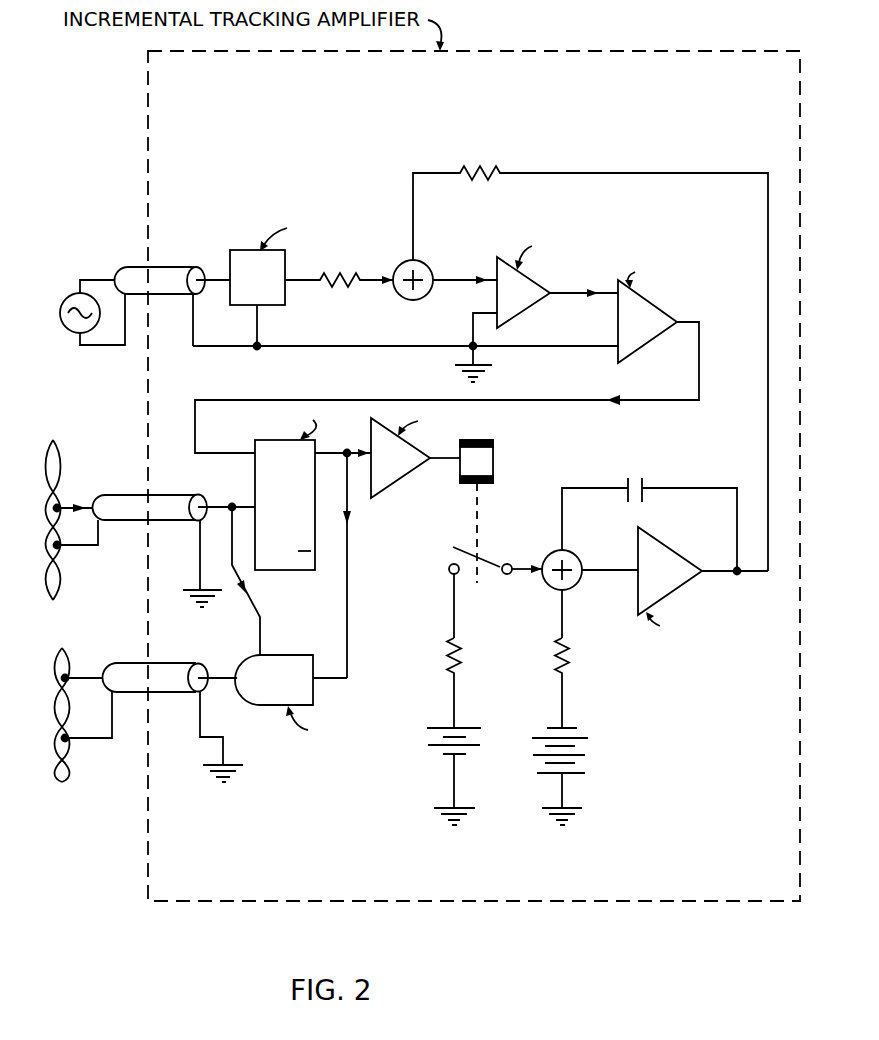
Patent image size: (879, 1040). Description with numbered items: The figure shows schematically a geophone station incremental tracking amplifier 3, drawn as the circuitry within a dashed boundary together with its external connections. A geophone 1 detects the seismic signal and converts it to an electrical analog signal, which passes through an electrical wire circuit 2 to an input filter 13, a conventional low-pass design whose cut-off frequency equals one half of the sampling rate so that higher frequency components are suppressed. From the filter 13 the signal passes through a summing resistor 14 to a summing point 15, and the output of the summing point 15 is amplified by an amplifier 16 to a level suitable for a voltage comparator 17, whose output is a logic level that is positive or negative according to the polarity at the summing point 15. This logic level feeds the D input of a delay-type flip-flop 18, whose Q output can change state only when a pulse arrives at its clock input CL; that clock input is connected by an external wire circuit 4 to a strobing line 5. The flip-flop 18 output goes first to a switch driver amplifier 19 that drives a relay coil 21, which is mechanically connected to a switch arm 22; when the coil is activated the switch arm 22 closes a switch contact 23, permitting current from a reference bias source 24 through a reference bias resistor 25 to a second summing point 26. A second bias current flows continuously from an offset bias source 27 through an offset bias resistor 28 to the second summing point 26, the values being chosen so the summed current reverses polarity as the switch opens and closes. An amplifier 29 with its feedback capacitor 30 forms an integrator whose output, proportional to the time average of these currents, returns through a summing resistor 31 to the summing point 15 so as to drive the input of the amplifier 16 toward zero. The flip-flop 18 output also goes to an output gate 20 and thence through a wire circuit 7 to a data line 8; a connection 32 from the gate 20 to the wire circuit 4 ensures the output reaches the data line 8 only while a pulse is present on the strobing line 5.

The geophone 1 is at (62, 322).
The electrical wire circuit 2 is at (173, 306).
The incremental tracking amplifier 3 is at (572, 46).
The external wire circuit 4 is at (173, 551).
The strobing line 5 is at (63, 477).
The wire circuit 7 is at (173, 722).
The data line 8 is at (55, 757).
The input filter 13 is at (288, 280).
The summing resistor 14 is at (340, 270).
The summing point 15 is at (428, 260).
The amplifier 16 is at (556, 289).
The voltage comparator 17 is at (480, 358).
The flip-flop 18 is at (290, 543).
The switch driver amplifier 19 is at (531, 453).
The output gate 20 is at (296, 698).
The relay coil 21 is at (476, 511).
The switch arm 22 is at (489, 559).
The switch contact 23 is at (447, 572).
The reference bias source 24 is at (430, 756).
The reference bias resistor 25 is at (444, 656).
The second summing point 26 is at (576, 554).
The offset bias source 27 is at (588, 746).
The offset bias resistor 28 is at (569, 641).
The amplifier 29 is at (703, 581).
The feedback capacitor 30 is at (634, 476).
The summing resistor 31 is at (490, 164).
The connection 32 is at (256, 601).